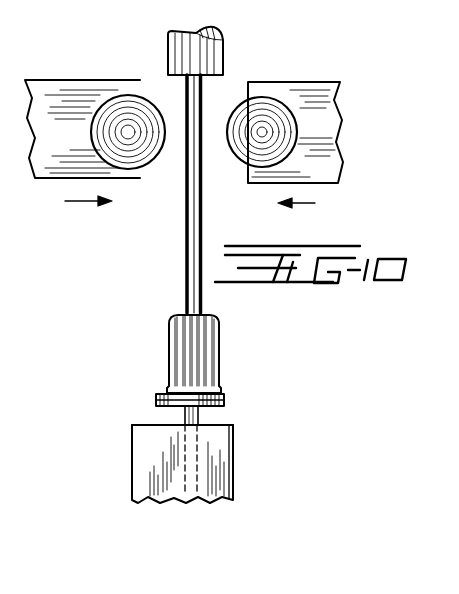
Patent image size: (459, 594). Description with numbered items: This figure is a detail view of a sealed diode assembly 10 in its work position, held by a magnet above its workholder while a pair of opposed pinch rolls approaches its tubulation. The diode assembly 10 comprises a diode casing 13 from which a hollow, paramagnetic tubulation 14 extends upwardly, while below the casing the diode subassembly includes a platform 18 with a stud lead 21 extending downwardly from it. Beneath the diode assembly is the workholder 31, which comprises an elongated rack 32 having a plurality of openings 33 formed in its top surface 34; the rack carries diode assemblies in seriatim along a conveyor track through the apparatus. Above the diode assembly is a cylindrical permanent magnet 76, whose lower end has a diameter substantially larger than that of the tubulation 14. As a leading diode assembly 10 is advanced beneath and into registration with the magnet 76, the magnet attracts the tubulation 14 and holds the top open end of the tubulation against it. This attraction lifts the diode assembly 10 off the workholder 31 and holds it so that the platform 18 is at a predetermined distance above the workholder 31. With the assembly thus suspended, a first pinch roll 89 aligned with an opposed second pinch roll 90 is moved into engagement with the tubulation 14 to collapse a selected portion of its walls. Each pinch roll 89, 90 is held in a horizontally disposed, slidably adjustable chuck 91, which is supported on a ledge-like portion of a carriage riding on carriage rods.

The diode assembly 10 is at (152, 316).
The diode casing 13 is at (218, 346).
The tubulation 14 is at (205, 236).
The platform 18 is at (225, 400).
The stud lead 21 is at (182, 412).
The workholder 31 is at (208, 468).
The elongated rack 32 is at (236, 490).
The openings 33 is at (180, 487).
The top surface 34 is at (226, 425).
The permanent magnet 76 is at (221, 44).
The first pinch roll 89 is at (145, 105).
The second pinch roll 90 is at (242, 100).
The chuck 91 is at (43, 85).